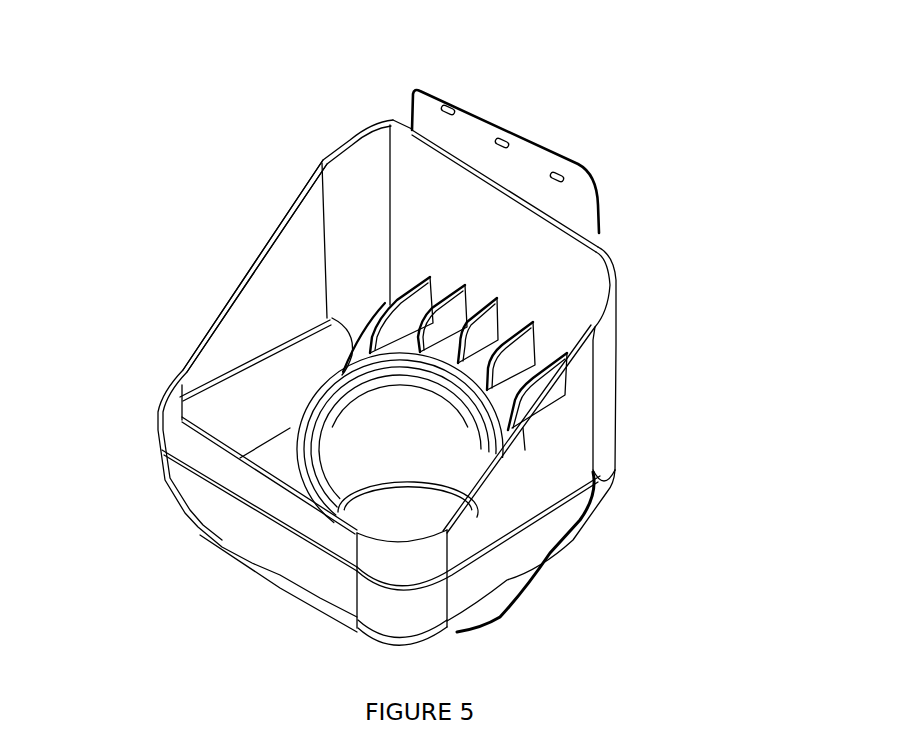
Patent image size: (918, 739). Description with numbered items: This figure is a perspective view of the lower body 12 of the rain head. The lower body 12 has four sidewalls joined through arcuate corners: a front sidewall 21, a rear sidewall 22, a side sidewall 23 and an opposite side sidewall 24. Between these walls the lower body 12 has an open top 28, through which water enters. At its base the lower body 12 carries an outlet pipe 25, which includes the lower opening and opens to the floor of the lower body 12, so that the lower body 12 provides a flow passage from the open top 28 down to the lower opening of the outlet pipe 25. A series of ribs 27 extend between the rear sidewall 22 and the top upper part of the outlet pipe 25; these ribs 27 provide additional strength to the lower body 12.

The lower body 12 is at (228, 225).
The front sidewall 21 is at (267, 542).
The rear sidewall 22 is at (445, 222).
The side sidewall 23 is at (557, 448).
The side sidewall 24 is at (265, 322).
The outlet pipe 25 is at (495, 612).
The ribs 27 is at (523, 358).
The open top 28 is at (278, 282).